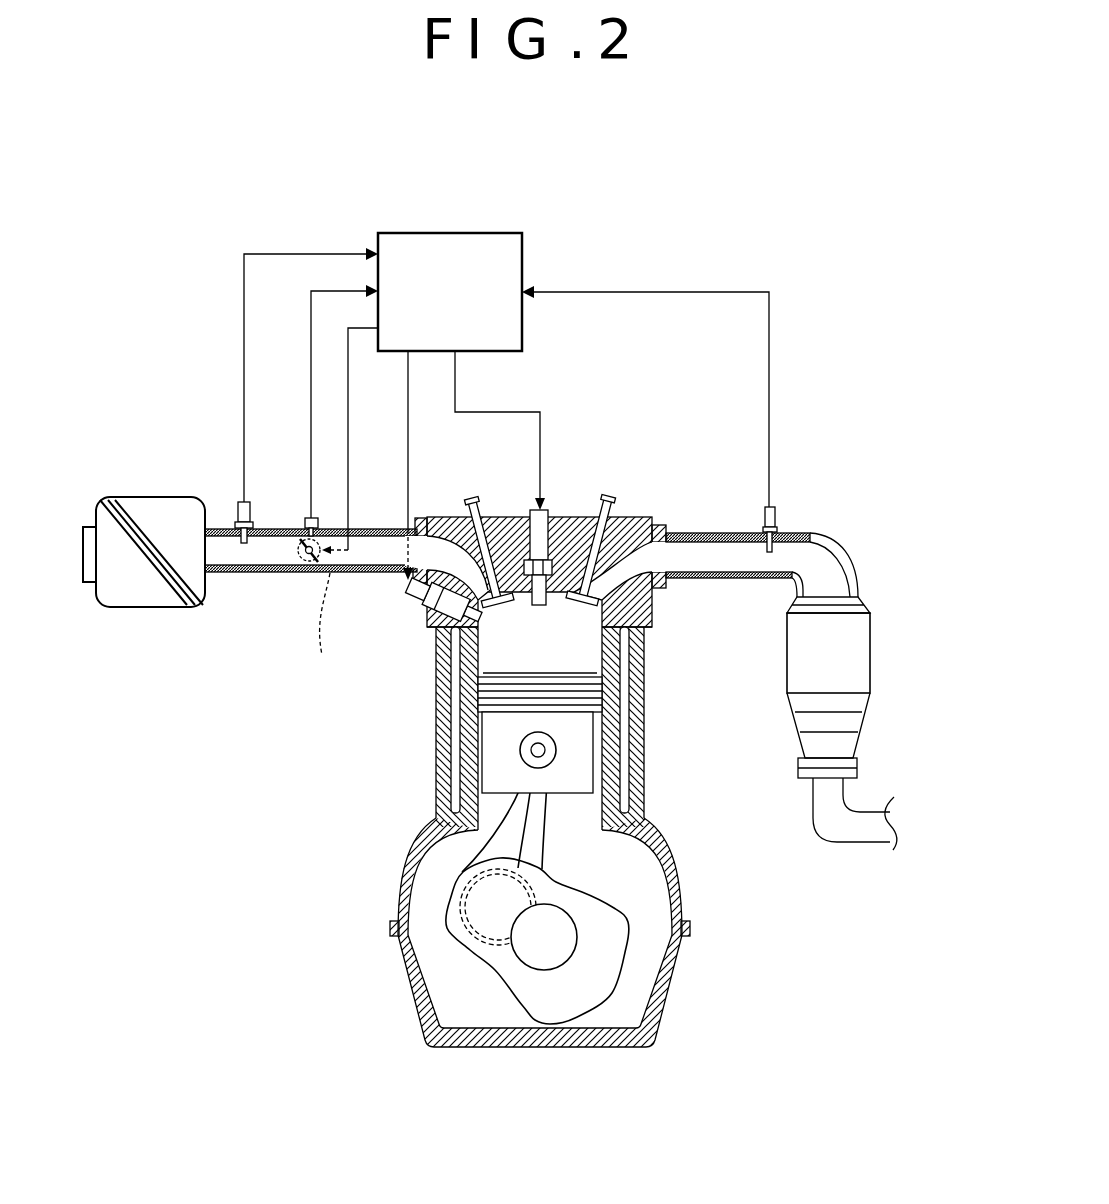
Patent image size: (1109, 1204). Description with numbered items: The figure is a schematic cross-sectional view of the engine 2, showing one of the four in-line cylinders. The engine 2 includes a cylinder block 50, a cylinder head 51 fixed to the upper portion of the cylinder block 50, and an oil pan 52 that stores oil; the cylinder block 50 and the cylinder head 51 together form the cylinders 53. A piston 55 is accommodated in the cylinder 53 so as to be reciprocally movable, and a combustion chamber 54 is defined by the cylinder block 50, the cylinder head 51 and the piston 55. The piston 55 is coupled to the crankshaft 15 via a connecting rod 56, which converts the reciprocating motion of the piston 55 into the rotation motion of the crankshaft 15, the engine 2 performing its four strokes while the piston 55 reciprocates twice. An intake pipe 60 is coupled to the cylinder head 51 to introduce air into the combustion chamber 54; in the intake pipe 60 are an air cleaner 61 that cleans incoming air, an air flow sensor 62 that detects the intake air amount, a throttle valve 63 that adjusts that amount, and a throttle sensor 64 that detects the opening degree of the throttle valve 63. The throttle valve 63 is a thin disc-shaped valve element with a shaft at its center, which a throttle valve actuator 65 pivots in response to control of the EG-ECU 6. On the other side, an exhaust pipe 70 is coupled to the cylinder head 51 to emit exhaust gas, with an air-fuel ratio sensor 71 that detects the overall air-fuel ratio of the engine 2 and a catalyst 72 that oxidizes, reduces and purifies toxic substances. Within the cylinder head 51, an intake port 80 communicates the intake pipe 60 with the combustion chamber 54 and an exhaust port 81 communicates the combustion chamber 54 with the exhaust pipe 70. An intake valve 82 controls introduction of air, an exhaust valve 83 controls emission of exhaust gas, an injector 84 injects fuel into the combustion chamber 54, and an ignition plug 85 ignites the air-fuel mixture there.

The engine 2 is at (682, 393).
The EG-ECU 6 is at (441, 233).
The crankshaft 15 is at (535, 952).
The cylinder block 50 is at (679, 905).
The cylinder head 51 is at (653, 612).
The oil pan 52 is at (657, 1002).
The cylinder 53 is at (642, 643).
The combustion chamber 54 is at (510, 649).
The piston 55 is at (582, 795).
The connecting rod 56 is at (537, 842).
The intake pipe 60 is at (397, 527).
The air cleaner 61 is at (128, 608).
The air flow sensor 62 is at (240, 505).
The throttle valve 63 is at (305, 564).
The throttle sensor 64 is at (308, 516).
The throttle valve actuator 65 is at (319, 634).
The exhaust pipe 70 is at (793, 533).
The air-fuel ratio sensor 71 is at (764, 510).
The catalyst 72 is at (862, 647).
The intake port 80 is at (441, 545).
The exhaust port 81 is at (621, 543).
The intake valve 82 is at (491, 545).
The exhaust valve 83 is at (583, 517).
The injector 84 is at (403, 603).
The ignition plug 85 is at (541, 537).